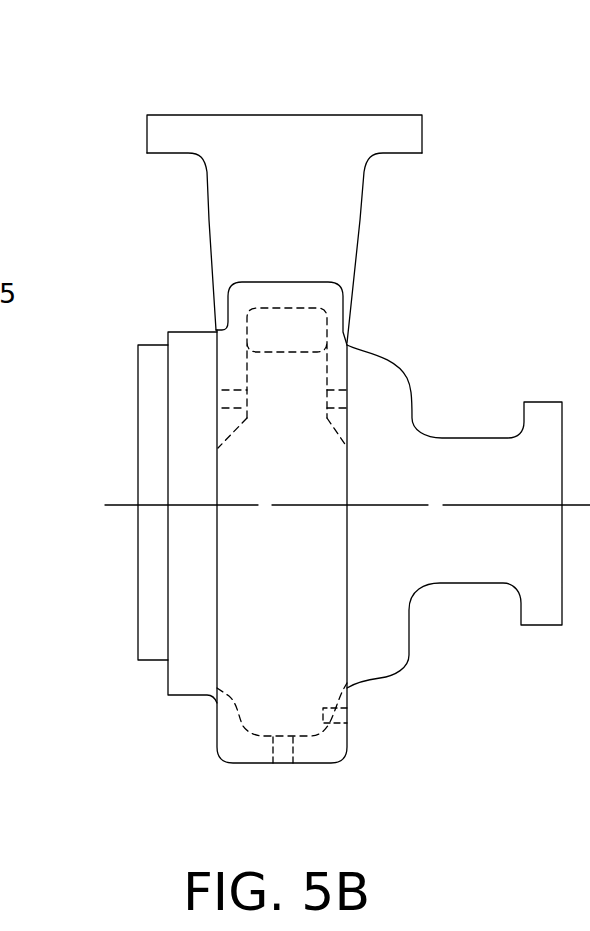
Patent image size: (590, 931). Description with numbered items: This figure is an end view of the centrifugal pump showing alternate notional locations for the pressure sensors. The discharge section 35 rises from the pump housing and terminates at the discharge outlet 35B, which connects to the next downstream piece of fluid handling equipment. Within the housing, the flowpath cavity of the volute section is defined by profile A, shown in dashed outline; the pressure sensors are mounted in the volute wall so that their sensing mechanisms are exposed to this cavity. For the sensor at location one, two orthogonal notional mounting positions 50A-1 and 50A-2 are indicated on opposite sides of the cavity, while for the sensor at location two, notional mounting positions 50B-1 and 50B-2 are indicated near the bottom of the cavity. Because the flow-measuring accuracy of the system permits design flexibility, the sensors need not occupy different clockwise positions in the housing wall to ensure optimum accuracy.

The discharge section 35 is at (305, 218).
The discharge outlet 35B is at (263, 115).
The profile A is at (302, 322).
The notional mounting position for sensor 50A 50A-1 is at (352, 398).
The notional mounting position for sensor 50A 50A-2 is at (213, 398).
The notional mounting position for sensor 50B 50B-1 is at (285, 765).
The notional mounting position for sensor 50B 50B-2 is at (348, 715).